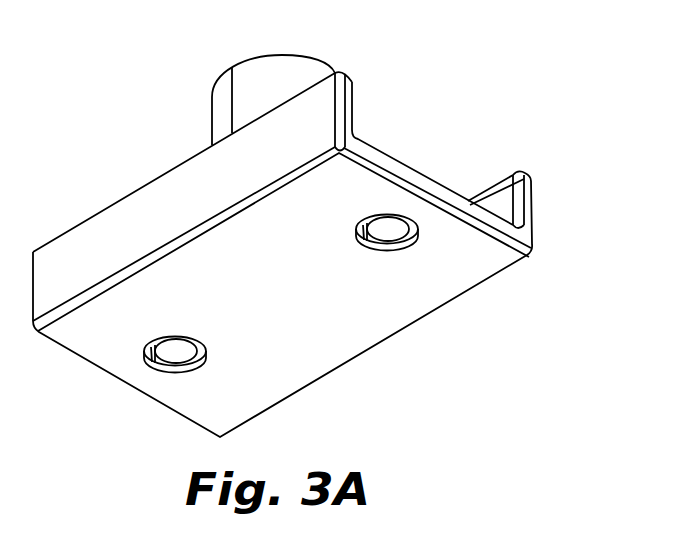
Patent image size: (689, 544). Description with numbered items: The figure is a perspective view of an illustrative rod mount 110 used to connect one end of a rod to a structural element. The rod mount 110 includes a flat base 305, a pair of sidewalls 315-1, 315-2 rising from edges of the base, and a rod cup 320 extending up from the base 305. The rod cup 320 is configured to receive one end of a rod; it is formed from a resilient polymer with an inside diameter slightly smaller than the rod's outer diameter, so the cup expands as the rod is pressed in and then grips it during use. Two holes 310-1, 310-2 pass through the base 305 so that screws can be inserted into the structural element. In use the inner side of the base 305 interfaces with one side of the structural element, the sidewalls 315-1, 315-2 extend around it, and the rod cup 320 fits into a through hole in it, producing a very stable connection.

The rod mount 110 is at (110, 68).
The base 305 is at (317, 292).
The hole 310-1 is at (395, 222).
The hole 310-2 is at (170, 362).
The sidewall 315-1 is at (185, 190).
The sidewall 315-2 is at (502, 200).
The rod cup 320 is at (275, 77).